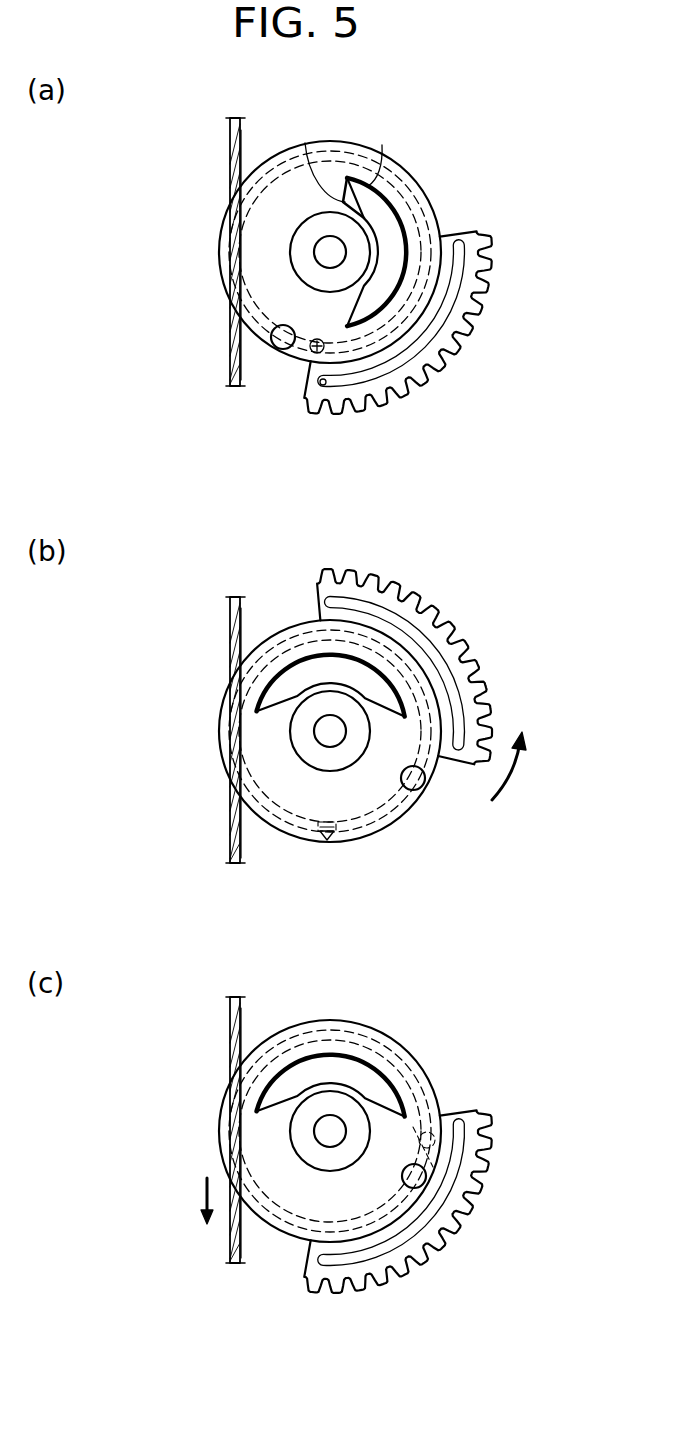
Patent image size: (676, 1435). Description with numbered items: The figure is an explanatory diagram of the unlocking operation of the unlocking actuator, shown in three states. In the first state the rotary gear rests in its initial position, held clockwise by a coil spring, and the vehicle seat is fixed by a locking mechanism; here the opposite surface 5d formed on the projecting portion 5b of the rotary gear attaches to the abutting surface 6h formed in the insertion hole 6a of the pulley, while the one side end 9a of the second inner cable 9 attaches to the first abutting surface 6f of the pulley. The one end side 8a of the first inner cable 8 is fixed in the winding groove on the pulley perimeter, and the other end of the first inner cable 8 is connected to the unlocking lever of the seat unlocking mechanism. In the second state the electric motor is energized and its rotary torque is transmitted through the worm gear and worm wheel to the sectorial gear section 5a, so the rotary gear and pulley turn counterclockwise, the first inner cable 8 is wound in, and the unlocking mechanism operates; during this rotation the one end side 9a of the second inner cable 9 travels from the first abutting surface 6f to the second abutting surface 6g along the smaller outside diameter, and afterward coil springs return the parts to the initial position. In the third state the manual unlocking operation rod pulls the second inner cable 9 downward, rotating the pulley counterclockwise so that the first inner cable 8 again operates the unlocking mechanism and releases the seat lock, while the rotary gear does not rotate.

The sectorial gear section 5a is at (467, 327).
The projecting portion 5b is at (383, 214).
The opposite surface 5d is at (312, 142).
The insertion hole 6a is at (392, 252).
The first abutting surface 6f is at (330, 383).
The second abutting surface 6g is at (323, 843).
The abutting surface 6h is at (380, 142).
The first inner cable 8 is at (230, 155).
The one end side of the first inner cable 8a is at (283, 338).
The second inner cable 9 is at (230, 357).
The one end side of the second inner cable 9a is at (314, 354).